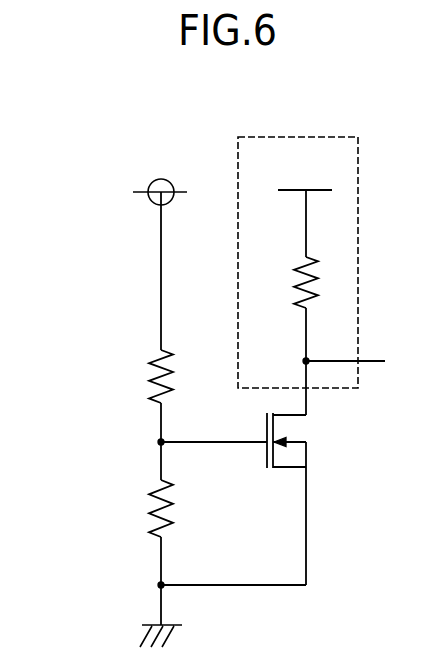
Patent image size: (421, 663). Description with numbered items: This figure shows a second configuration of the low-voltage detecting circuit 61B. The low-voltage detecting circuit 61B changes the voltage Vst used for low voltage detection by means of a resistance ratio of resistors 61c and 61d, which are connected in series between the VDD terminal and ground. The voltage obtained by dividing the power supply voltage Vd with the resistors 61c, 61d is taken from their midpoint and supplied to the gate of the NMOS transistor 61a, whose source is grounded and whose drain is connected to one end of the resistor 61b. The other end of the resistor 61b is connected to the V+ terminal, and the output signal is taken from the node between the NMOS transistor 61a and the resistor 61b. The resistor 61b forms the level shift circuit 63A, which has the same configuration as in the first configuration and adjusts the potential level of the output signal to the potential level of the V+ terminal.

The low-voltage detecting circuit 61B is at (86, 155).
The level shift circuit 63A is at (299, 136).
The NMOS transistor 61a is at (265, 452).
The resistor 61b is at (302, 262).
The resistor 61c is at (162, 353).
The resistor 61d is at (162, 488).